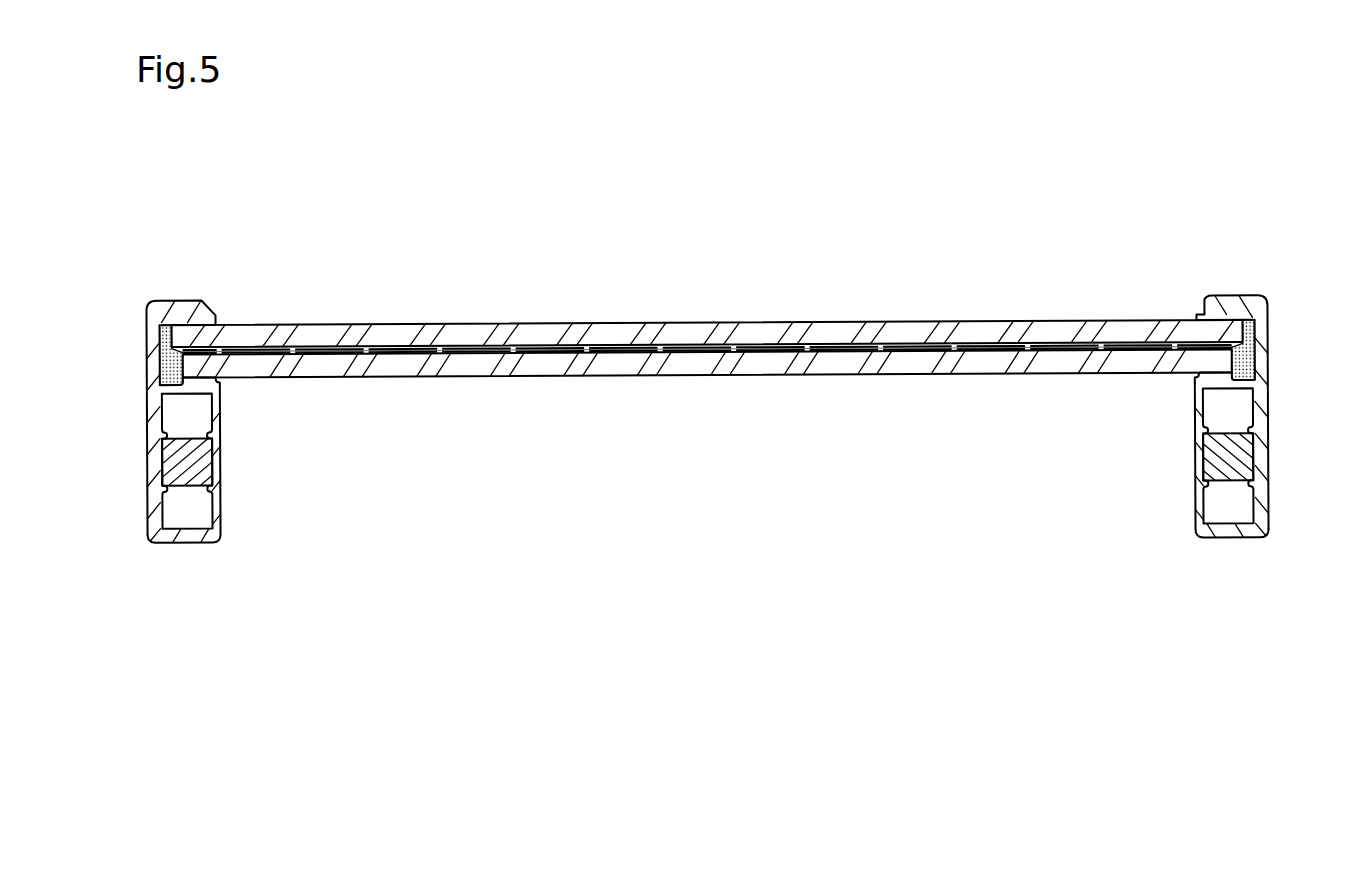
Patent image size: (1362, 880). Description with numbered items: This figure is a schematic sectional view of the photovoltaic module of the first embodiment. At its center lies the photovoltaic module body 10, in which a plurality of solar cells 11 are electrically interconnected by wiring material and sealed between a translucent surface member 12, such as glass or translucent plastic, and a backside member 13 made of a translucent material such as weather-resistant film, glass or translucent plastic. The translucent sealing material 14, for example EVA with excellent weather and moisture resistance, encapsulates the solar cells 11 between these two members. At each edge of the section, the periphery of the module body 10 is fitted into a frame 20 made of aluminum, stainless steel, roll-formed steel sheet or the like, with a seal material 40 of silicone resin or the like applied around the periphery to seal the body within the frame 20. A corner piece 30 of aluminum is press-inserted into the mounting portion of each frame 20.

The photovoltaic module body 10 is at (707, 345).
The solar cell 11 is at (260, 346).
The surface member 12 is at (612, 334).
The backside member 13 is at (665, 368).
The translucent sealing material 14 is at (735, 350).
The frame 20 is at (152, 320).
The corner piece 30 is at (175, 459).
The seal material 40 is at (175, 367).